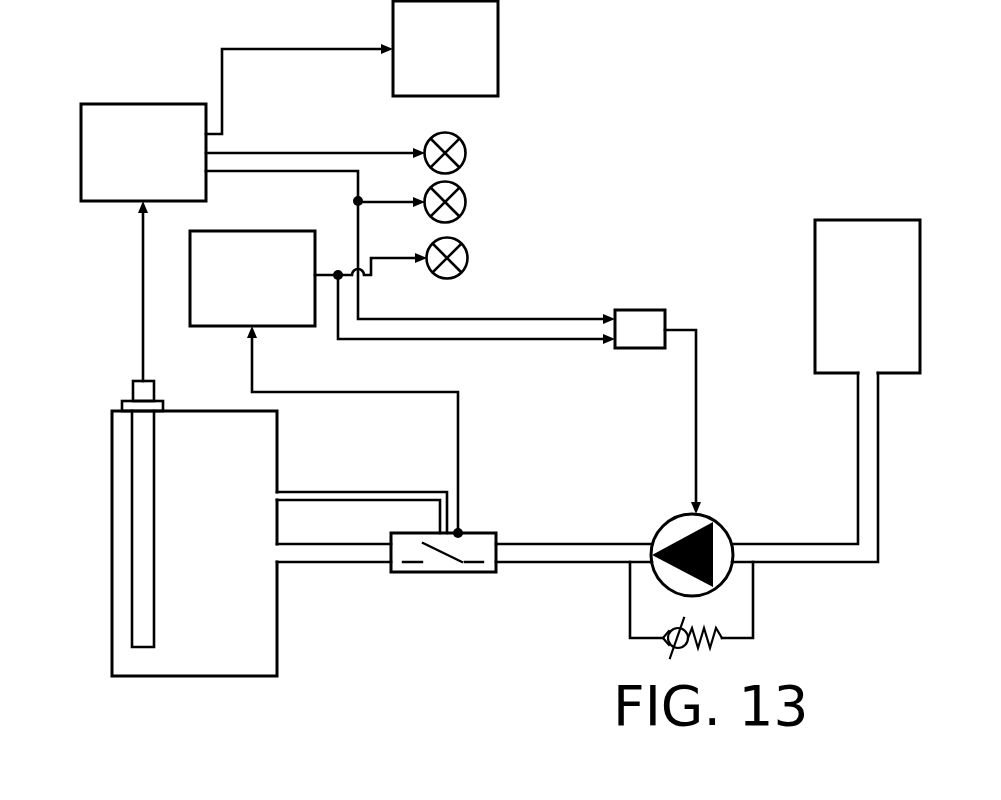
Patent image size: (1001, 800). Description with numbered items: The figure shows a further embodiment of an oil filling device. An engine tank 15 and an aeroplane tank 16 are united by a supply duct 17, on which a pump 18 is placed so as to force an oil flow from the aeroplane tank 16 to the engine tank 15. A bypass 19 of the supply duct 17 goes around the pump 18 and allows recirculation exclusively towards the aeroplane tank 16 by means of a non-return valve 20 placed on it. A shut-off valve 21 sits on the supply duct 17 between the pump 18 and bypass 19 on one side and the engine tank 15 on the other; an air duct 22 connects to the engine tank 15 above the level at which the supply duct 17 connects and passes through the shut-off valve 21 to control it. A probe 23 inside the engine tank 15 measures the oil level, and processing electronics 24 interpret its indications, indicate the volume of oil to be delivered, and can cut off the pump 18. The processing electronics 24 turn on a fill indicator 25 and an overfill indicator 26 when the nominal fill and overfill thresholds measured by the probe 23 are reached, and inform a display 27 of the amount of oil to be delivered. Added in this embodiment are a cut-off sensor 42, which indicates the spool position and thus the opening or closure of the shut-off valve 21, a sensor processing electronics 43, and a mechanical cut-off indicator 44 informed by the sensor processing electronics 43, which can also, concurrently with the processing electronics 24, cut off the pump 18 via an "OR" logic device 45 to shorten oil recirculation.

The engine tank 15 is at (284, 651).
The aeroplane tank 16 is at (812, 318).
The supply duct 17 is at (331, 577).
The pump 18 is at (708, 513).
The bypass 19 is at (757, 598).
The non-return valve 20 is at (663, 645).
The shut-off valve 21 is at (470, 580).
The air duct 22 is at (333, 488).
The probe 23 is at (140, 581).
The processing electronics 24 is at (143, 152).
The fill indicator 25 is at (468, 153).
The overfill indicator 26 is at (468, 202).
The display 27 is at (352, 67).
The cut-off sensor 42 is at (458, 533).
The sensor processing electronics 43 is at (324, 382).
The mechanical cut-off indicator 44 is at (470, 258).
The "OR" logic device 45 is at (637, 343).